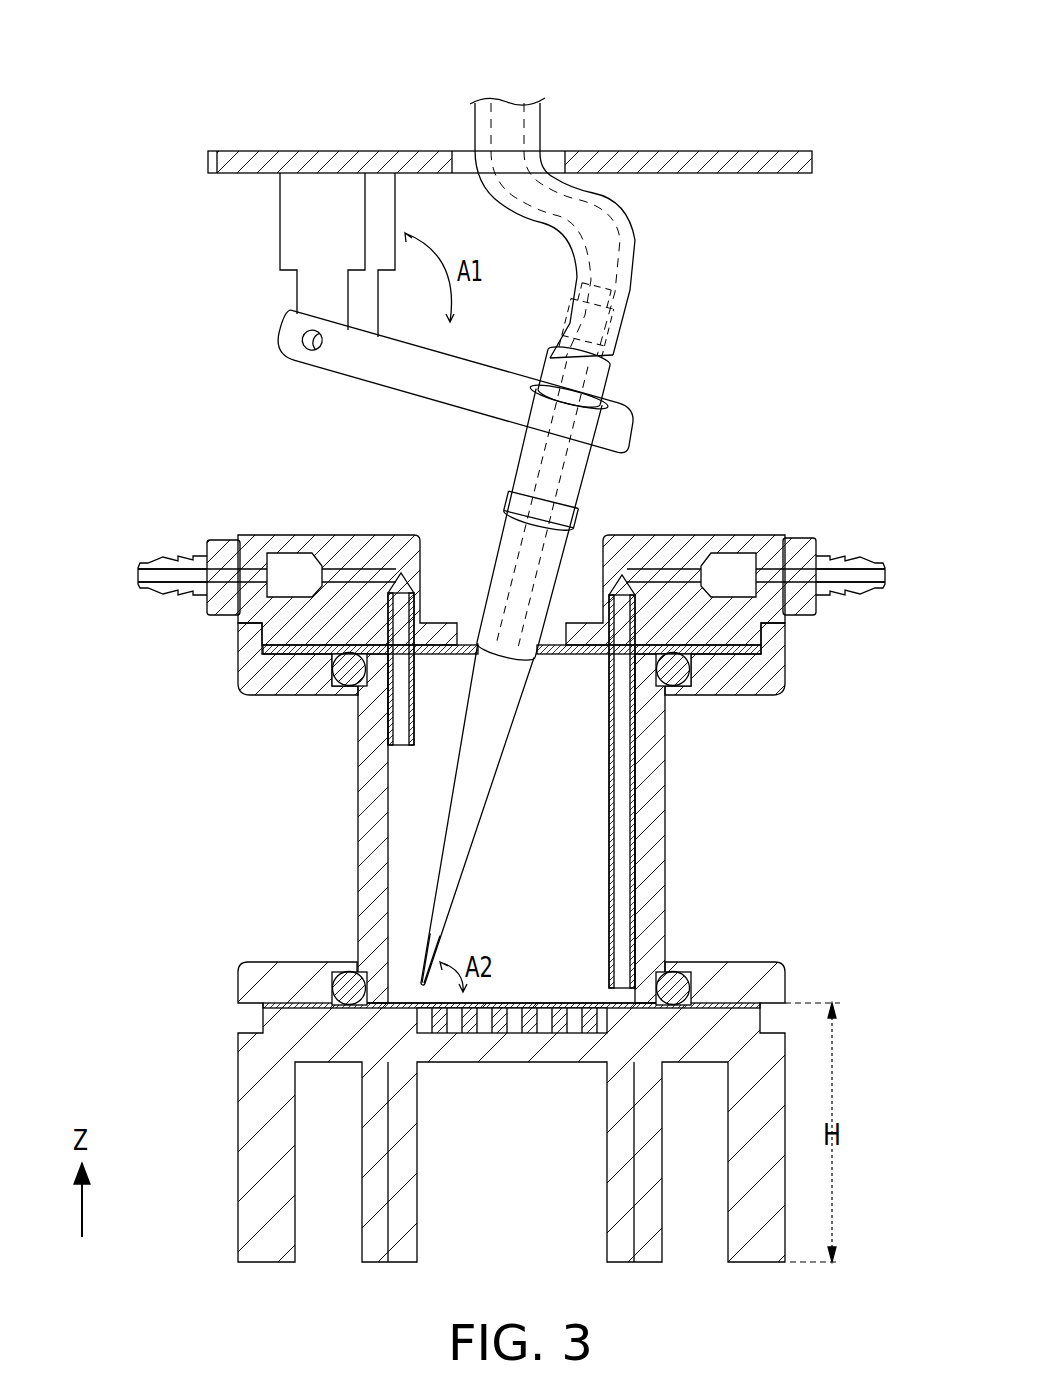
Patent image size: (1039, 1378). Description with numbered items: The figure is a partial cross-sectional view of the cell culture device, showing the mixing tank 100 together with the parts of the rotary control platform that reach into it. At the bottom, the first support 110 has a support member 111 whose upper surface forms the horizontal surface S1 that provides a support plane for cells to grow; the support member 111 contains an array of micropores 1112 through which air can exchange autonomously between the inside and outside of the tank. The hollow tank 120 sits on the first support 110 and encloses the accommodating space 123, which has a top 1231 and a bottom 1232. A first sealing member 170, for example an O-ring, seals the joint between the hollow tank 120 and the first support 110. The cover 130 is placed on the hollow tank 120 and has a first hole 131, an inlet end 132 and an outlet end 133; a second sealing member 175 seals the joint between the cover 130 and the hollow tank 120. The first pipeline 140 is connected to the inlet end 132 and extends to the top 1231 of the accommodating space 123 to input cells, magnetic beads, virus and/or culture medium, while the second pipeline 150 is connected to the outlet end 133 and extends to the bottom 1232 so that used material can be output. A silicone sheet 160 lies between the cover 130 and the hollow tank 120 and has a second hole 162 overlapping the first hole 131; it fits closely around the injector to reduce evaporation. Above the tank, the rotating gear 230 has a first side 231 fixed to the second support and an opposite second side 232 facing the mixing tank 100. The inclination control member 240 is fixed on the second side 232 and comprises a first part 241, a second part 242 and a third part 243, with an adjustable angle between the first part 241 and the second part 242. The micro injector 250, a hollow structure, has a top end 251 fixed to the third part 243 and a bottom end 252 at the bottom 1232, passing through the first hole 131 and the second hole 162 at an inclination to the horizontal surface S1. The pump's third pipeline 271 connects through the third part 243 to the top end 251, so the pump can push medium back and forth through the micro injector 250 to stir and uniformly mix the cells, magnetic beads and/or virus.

The mixing tank 100 is at (826, 720).
The first support 110 is at (467, 1112).
The support member 111 is at (253, 1062).
The micropores 1112 is at (483, 1025).
The hollow tank 120 is at (510, 828).
The accommodating space 123 is at (413, 829).
The top of the accommodating space 1231 is at (418, 779).
The bottom of the accommodating space 1232 is at (557, 920).
The cover 130 is at (450, 347).
The first hole 131 is at (467, 612).
The inlet end 132 is at (226, 550).
The outlet end 133 is at (807, 540).
The first pipeline 140 is at (398, 728).
The second pipeline 150 is at (618, 765).
The silicone sheet 160 is at (476, 644).
The second hole 162 is at (542, 668).
The first sealing member 170 is at (352, 978).
The second sealing member 175 is at (345, 668).
The rotating gear 230 is at (473, 161).
The first side 231 is at (244, 143).
The second side 232 is at (244, 177).
The inclination control member 240 is at (385, 419).
The first part 241 is at (285, 252).
The second part 242 is at (293, 325).
The third part 243 is at (527, 473).
The micro injector 250 is at (571, 634).
The top end 251 is at (603, 522).
The bottom end 252 is at (433, 935).
The third pipeline 271 is at (602, 239).
The horizontal surface S1 is at (553, 994).